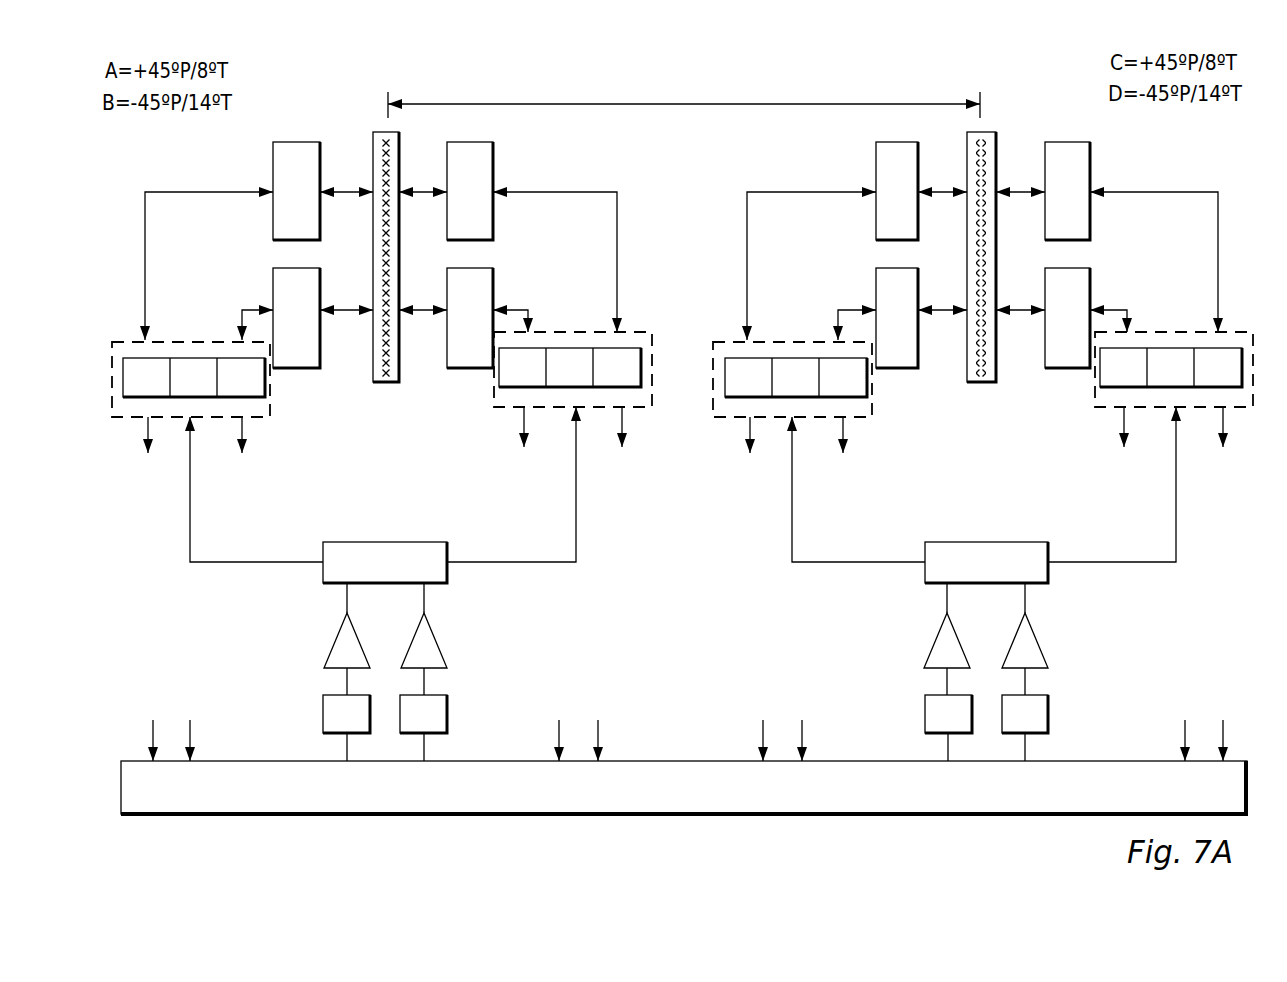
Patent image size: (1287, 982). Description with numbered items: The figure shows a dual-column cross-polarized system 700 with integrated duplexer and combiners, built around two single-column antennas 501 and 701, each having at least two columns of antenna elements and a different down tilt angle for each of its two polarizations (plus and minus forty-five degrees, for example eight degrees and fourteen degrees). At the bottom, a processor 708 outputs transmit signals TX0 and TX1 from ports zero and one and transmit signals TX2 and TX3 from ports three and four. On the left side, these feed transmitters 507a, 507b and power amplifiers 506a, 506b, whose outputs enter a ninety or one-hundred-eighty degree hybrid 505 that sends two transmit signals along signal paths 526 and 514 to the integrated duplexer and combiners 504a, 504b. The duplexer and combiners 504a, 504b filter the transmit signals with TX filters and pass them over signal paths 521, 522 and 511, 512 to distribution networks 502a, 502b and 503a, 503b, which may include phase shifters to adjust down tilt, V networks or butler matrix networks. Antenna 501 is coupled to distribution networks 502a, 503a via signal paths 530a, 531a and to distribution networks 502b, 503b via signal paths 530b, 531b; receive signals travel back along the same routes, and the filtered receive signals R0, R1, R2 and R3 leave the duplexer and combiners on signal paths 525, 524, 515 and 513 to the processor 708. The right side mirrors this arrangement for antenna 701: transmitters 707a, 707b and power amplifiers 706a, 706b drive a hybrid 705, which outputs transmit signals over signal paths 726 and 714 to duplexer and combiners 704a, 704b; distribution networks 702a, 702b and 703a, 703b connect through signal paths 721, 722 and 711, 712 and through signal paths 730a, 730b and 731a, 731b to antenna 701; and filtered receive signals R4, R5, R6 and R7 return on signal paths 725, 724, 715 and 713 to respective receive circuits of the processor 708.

The dual-column cross-polarized system 700 is at (760, 68).
The single-column antenna 501 is at (373, 132).
The single-column antenna 701 is at (998, 136).
The distribution network 502a is at (274, 164).
The distribution network 502b is at (273, 281).
The distribution network 503a is at (492, 157).
The distribution network 503b is at (488, 286).
The distribution network 702a is at (873, 163).
The distribution network 702b is at (876, 282).
The distribution network 703a is at (1094, 155).
The distribution network 703b is at (1090, 286).
The integrated duplexer and combiner 504a is at (130, 342).
The integrated duplexer and combiner 504b is at (628, 332).
The integrated duplexer and combiner 704a is at (732, 342).
The integrated duplexer and combiner 704b is at (1226, 332).
The hybrid 505 is at (322, 552).
The hybrid 705 is at (925, 552).
The power amplifier 506a is at (336, 635).
The power amplifier 506b is at (434, 635).
The power amplifier 706a is at (938, 635).
The power amplifier 706b is at (1035, 635).
The transmitter 507a is at (323, 706).
The transmitter 507b is at (447, 706).
The transmitter 707a is at (925, 705).
The transmitter 707b is at (1048, 705).
The processor 708 is at (684, 787).
The signal path 511 is at (594, 191).
The signal path 512 is at (531, 312).
The signal path 521 is at (143, 202).
The signal path 522 is at (239, 312).
The signal path 711 is at (1220, 207).
The signal path 712 is at (1128, 312).
The signal path 721 is at (766, 191).
The signal path 722 is at (838, 312).
The signal path 513 is at (624, 435).
The signal path 515 is at (522, 432).
The signal path 524 is at (246, 440).
The signal path 525 is at (146, 435).
The signal path 713 is at (1226, 435).
The signal path 715 is at (1122, 430).
The signal path 724 is at (846, 440).
The signal path 725 is at (748, 434).
The signal path 514 is at (578, 560).
The signal path 526 is at (189, 560).
The signal path 714 is at (1178, 560).
The signal path 726 is at (792, 560).
The signal path 530a is at (349, 198).
The signal path 530b is at (347, 320).
The signal path 531a is at (425, 198).
The signal path 531b is at (425, 320).
The signal path 730a is at (947, 196).
The signal path 730b is at (945, 318).
The signal path 731a is at (1022, 196).
The signal path 731b is at (1022, 318).